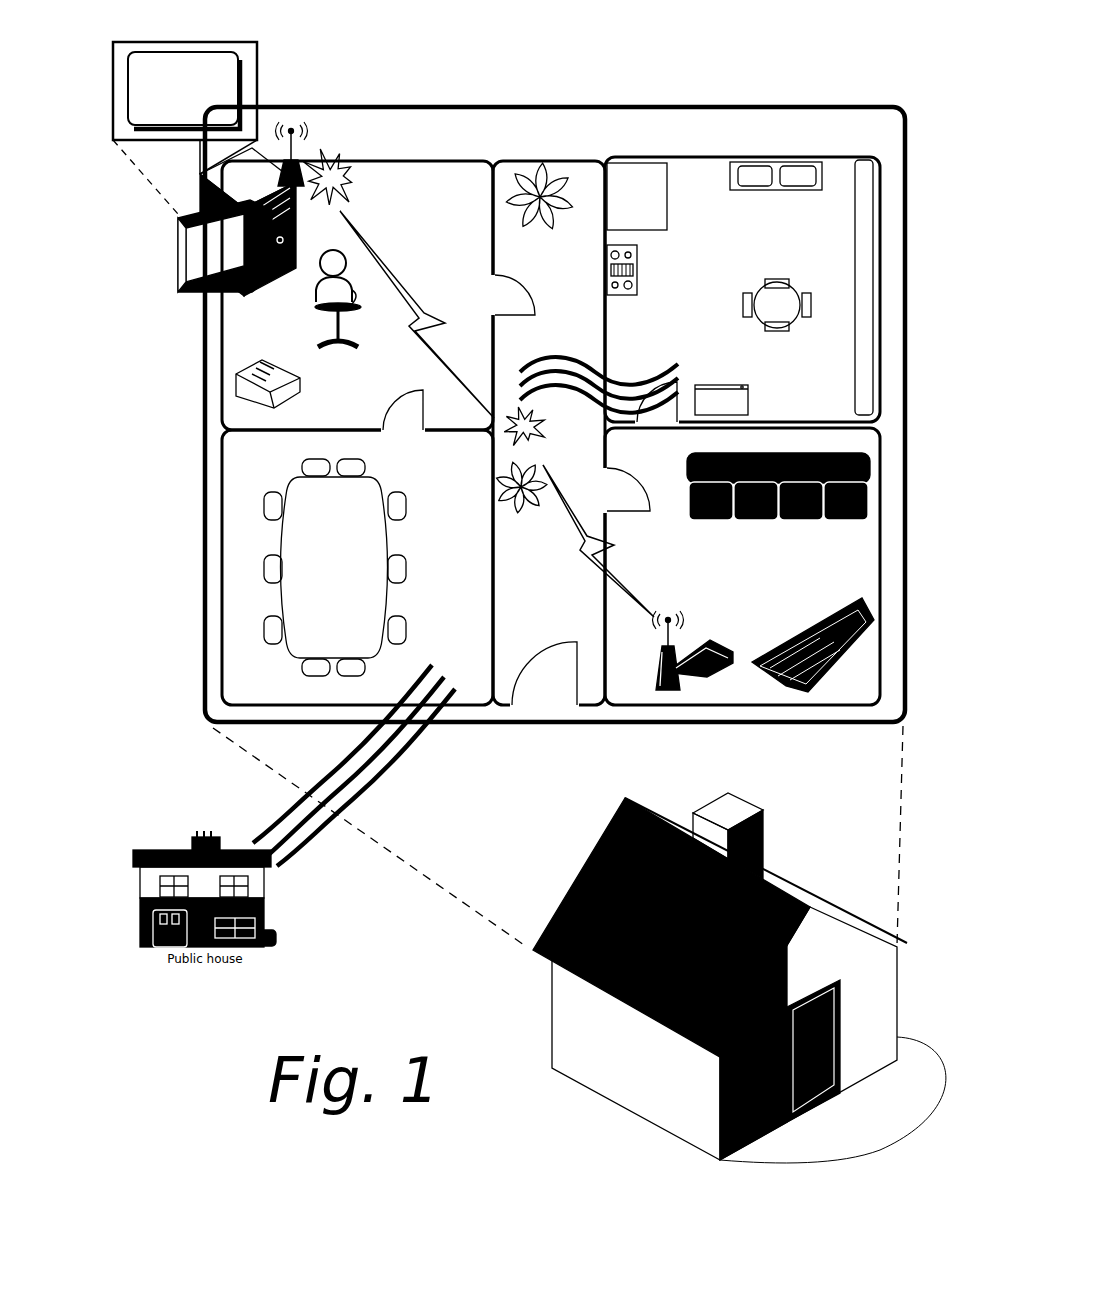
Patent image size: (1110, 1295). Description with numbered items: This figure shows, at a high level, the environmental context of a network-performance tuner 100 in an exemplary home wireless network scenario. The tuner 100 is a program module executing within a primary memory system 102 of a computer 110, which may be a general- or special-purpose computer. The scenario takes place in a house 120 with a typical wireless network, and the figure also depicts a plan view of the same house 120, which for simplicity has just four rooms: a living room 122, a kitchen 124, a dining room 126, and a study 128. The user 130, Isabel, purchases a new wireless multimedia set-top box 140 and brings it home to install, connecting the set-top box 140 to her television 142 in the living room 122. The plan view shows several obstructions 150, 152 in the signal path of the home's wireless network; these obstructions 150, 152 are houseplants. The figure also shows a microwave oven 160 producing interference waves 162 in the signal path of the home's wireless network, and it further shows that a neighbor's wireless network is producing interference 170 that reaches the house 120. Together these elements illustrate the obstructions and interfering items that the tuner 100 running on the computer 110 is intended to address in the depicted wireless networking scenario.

The network-performance tuner 100 is at (243, 85).
The primary memory system 102 is at (259, 44).
The computer 110 is at (268, 293).
The house 120 is at (855, 134).
The living room 122 is at (703, 559).
The kitchen 124 is at (703, 349).
The dining room 126 is at (456, 641).
The study 128 is at (470, 269).
The user 130 is at (340, 250).
The wireless multimedia set-top box 140 is at (701, 640).
The television 142 is at (849, 598).
The obstruction 150 is at (523, 532).
The obstruction 152 is at (336, 158).
The microwave oven 160 is at (745, 384).
The interference waves 162 is at (547, 362).
The interference 170 is at (418, 757).